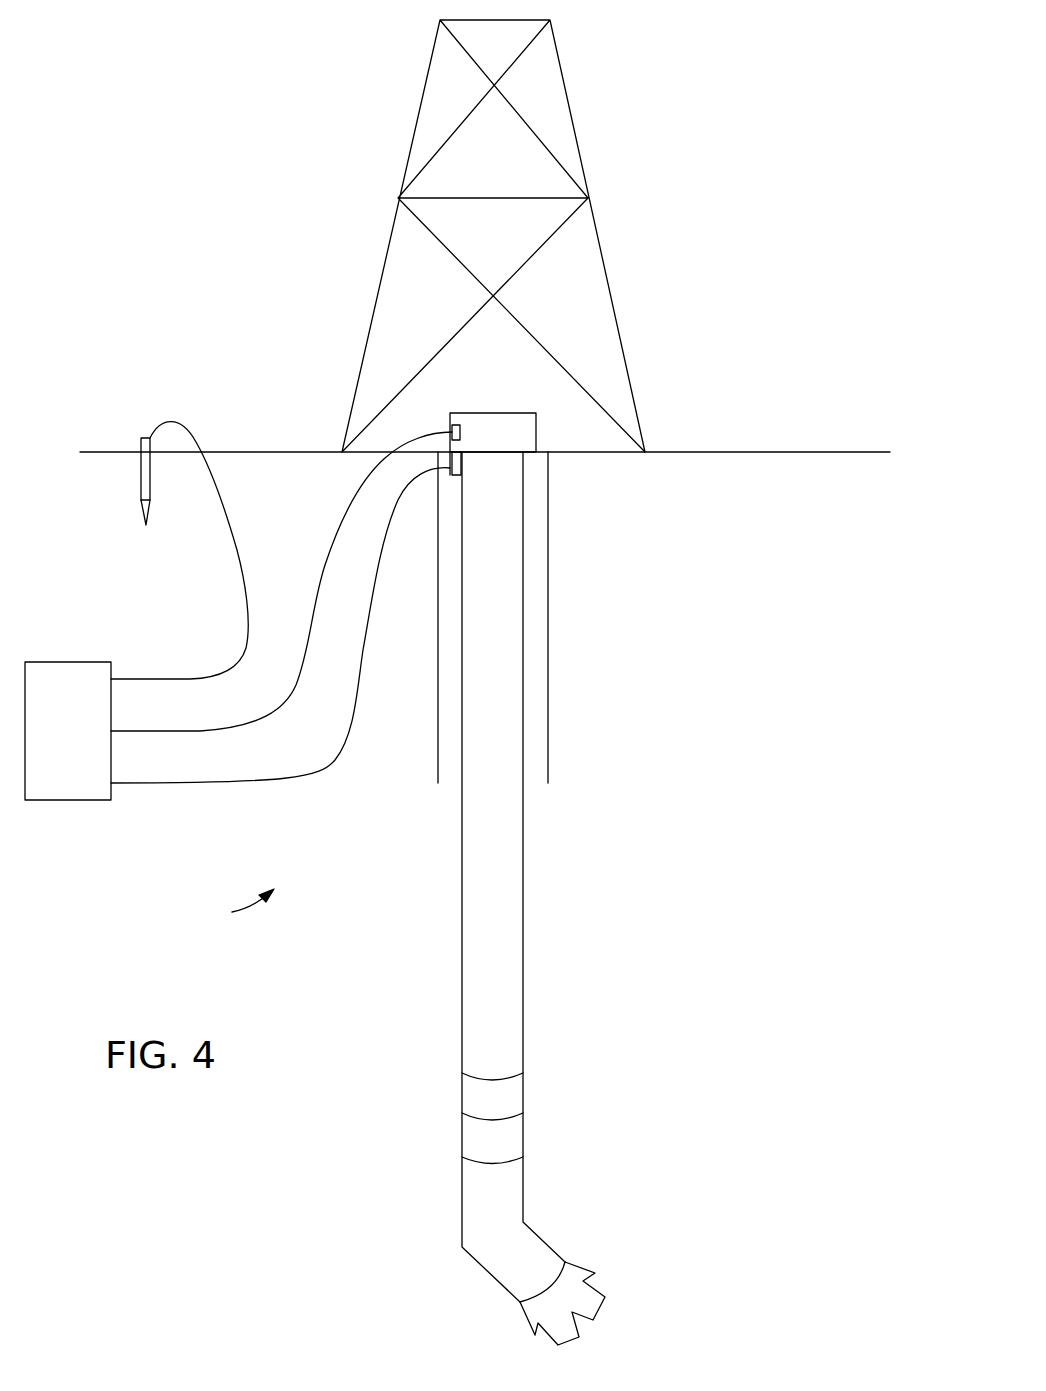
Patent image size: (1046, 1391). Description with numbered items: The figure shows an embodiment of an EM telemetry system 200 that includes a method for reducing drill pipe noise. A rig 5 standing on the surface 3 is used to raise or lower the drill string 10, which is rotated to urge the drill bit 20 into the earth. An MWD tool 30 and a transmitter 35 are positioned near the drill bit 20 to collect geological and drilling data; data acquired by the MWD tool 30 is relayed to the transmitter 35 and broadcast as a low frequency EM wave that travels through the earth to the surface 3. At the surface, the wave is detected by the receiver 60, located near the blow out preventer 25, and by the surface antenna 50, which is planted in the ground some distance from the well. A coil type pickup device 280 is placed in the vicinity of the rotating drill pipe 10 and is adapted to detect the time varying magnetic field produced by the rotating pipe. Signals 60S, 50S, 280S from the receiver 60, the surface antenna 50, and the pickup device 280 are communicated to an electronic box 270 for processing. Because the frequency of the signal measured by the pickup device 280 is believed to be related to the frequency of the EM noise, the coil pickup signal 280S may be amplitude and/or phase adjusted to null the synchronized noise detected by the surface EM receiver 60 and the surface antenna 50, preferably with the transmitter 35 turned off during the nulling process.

The rig 5 is at (572, 113).
The surface 3 is at (692, 452).
The blow out preventer 25 is at (520, 413).
The receiver 60 is at (455, 425).
The coil type pickup device 280 is at (458, 478).
The surface antenna 50 is at (147, 435).
The signal from the surface antenna 50S is at (179, 550).
The signal from the receiver 60S is at (281, 581).
The coil pickup signal 280S is at (280, 625).
The electronic box 270 is at (68, 731).
The drill string 10 is at (524, 875).
The transmitter 35 is at (525, 1090).
The MWD tool 30 is at (525, 1135).
The drill bit 20 is at (602, 1294).
The EM telemetry system 200 is at (225, 908).